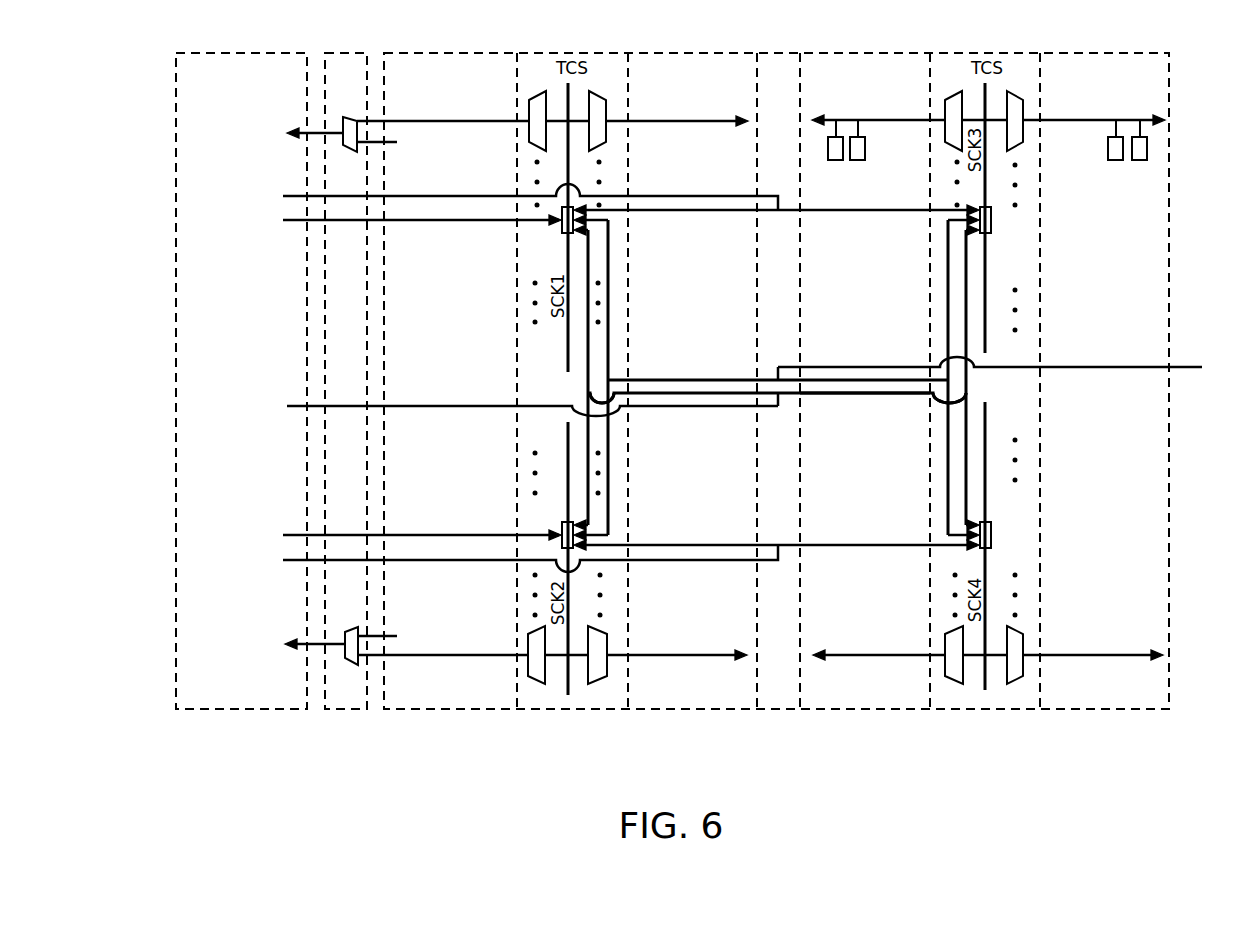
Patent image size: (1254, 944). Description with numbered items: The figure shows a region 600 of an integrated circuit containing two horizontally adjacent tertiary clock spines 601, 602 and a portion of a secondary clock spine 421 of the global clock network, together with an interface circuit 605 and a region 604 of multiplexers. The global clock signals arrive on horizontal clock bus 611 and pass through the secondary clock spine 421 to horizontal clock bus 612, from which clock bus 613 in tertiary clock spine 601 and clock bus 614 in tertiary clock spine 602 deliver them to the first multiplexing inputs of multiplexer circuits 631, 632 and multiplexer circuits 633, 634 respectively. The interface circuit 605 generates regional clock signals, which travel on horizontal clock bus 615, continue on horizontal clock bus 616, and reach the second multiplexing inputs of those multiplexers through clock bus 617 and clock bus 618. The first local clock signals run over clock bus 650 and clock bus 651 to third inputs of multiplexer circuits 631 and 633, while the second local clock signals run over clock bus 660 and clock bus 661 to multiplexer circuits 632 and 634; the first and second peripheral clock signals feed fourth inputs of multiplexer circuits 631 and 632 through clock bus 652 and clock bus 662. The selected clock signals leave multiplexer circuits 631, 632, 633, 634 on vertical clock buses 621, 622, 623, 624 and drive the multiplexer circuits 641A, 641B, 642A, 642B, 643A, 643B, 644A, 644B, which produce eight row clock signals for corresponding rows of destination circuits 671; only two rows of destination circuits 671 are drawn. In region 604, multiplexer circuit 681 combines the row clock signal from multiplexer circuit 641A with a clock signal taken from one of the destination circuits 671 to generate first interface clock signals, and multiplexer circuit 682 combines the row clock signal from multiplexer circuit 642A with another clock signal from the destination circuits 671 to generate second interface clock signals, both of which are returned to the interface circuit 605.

The region 600 is at (453, 53).
The tertiary clock spine 601 is at (628, 268).
The tertiary clock spine 602 is at (1040, 316).
The region 604 is at (346, 710).
The interface circuit 605 is at (176, 236).
The secondary clock spine 421 is at (800, 264).
The horizontal clock bus 611 is at (1130, 370).
The horizontal clock bus 612 is at (735, 378).
The clock bus 613 is at (609, 440).
The clock bus 614 is at (945, 240).
The horizontal clock bus 615 is at (478, 408).
The horizontal clock bus 616 is at (880, 396).
The clock bus 617 is at (588, 390).
The clock bus 618 is at (966, 373).
The vertical clock bus 621 is at (568, 330).
The vertical clock bus 622 is at (568, 452).
The vertical clock bus 623 is at (985, 336).
The vertical clock bus 624 is at (985, 446).
The multiplexer circuit 631 is at (560, 235).
The multiplexer circuit 632 is at (560, 522).
The multiplexer circuit 633 is at (992, 233).
The multiplexer circuit 634 is at (992, 522).
The multiplexer circuit 641A is at (530, 143).
The multiplexer circuit 641B is at (605, 143).
The multiplexer circuit 642A is at (530, 676).
The multiplexer circuit 642B is at (607, 676).
The multiplexer circuit 643A is at (946, 143).
The multiplexer circuit 643B is at (1022, 143).
The multiplexer circuit 644A is at (946, 676).
The multiplexer circuit 644B is at (1022, 676).
The clock bus 650 is at (410, 196).
The clock bus 651 is at (722, 212).
The clock bus 652 is at (420, 222).
The clock bus 660 is at (428, 562).
The clock bus 661 is at (714, 544).
The clock bus 662 is at (426, 535).
The destination circuits 671 is at (836, 160).
The multiplexer circuit 681 is at (349, 118).
The multiplexer circuit 682 is at (350, 630).